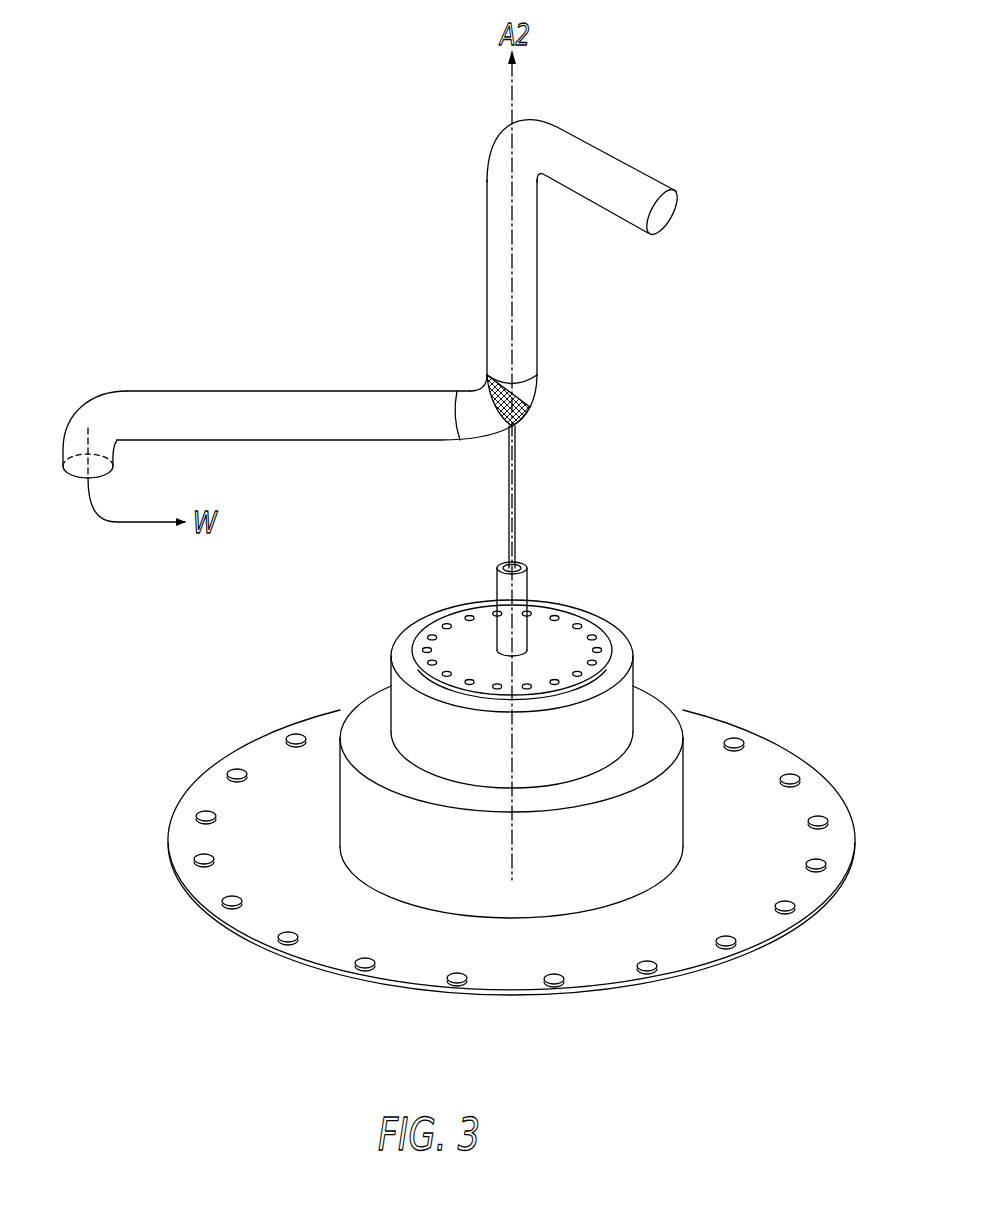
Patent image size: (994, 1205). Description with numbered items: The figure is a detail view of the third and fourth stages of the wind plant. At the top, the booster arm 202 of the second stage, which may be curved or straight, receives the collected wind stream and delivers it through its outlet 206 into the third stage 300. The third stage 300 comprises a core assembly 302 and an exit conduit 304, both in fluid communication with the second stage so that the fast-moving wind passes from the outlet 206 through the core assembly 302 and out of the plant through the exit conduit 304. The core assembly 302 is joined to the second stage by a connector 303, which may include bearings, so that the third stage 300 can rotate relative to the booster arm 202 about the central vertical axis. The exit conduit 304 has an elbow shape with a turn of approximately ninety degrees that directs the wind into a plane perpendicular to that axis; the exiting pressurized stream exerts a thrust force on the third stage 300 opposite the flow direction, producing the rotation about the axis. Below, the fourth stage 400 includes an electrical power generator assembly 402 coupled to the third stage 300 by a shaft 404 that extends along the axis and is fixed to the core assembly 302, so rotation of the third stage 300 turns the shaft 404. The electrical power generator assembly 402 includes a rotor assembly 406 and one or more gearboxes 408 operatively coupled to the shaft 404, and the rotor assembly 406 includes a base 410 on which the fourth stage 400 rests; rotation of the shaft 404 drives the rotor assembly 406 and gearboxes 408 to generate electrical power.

The booster arm 202 is at (628, 160).
The outlet 206 is at (557, 393).
The third stage 300 is at (247, 317).
The core assembly 302 is at (450, 360).
The connector 303 is at (522, 405).
The exit conduit 304 is at (303, 441).
The fourth stage 400 is at (782, 592).
The electrical power generator assembly 402 is at (325, 640).
The shaft 404 is at (520, 498).
The rotor assembly 406 is at (676, 803).
The gearbox 408 is at (617, 647).
The base 410 is at (232, 815).